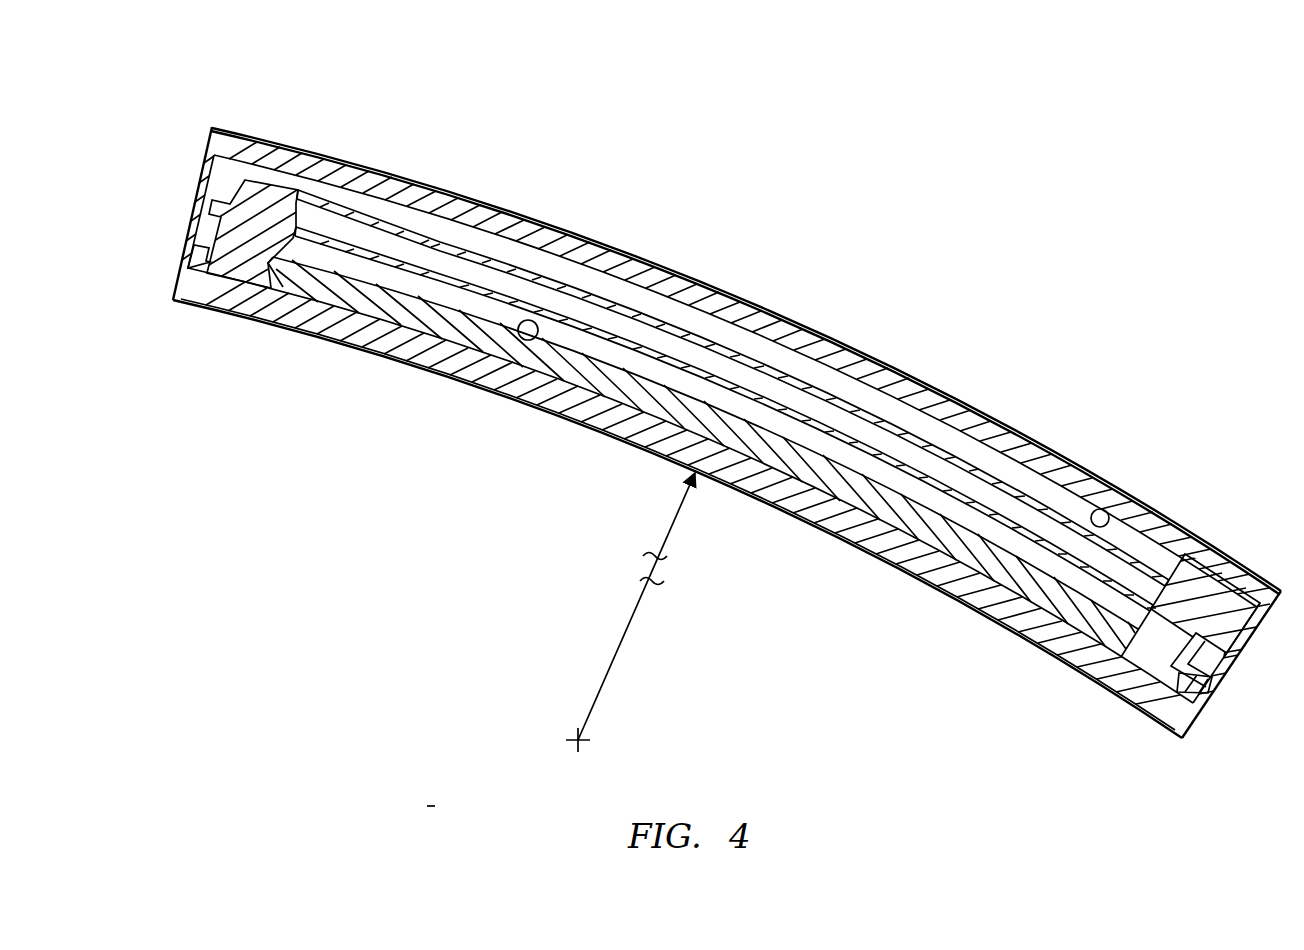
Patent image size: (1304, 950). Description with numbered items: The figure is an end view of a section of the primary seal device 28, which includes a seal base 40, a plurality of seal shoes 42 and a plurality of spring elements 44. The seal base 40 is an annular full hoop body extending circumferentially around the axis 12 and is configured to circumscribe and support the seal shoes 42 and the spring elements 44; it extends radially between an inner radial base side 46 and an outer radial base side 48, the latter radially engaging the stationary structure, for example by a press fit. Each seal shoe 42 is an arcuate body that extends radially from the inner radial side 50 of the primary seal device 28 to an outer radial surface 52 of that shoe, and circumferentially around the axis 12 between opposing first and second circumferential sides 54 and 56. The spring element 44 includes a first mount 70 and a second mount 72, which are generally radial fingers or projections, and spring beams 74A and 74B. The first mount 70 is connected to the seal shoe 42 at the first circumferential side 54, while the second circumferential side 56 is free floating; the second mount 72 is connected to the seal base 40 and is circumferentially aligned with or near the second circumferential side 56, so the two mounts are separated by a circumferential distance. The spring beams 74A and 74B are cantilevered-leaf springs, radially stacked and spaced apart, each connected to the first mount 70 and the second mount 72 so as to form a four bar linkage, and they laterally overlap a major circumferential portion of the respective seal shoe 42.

The primary seal device 28 is at (1086, 278).
The seal base 40 is at (714, 282).
The seal shoe 42 is at (437, 377).
The spring element 44 is at (380, 268).
The spring beam 74A is at (328, 245).
The spring beam 74B is at (357, 218).
The first circumferential side 54 is at (174, 270).
The second circumferential side 56 is at (1184, 740).
The first mount 70 is at (237, 182).
The second mount 72 is at (1206, 632).
The inner radial base side 46 is at (1132, 494).
The outer radial base side 48 is at (1097, 510).
The inner radial side 50 is at (598, 433).
The outer radial surface 52 is at (520, 336).
The axis 12 is at (592, 742).